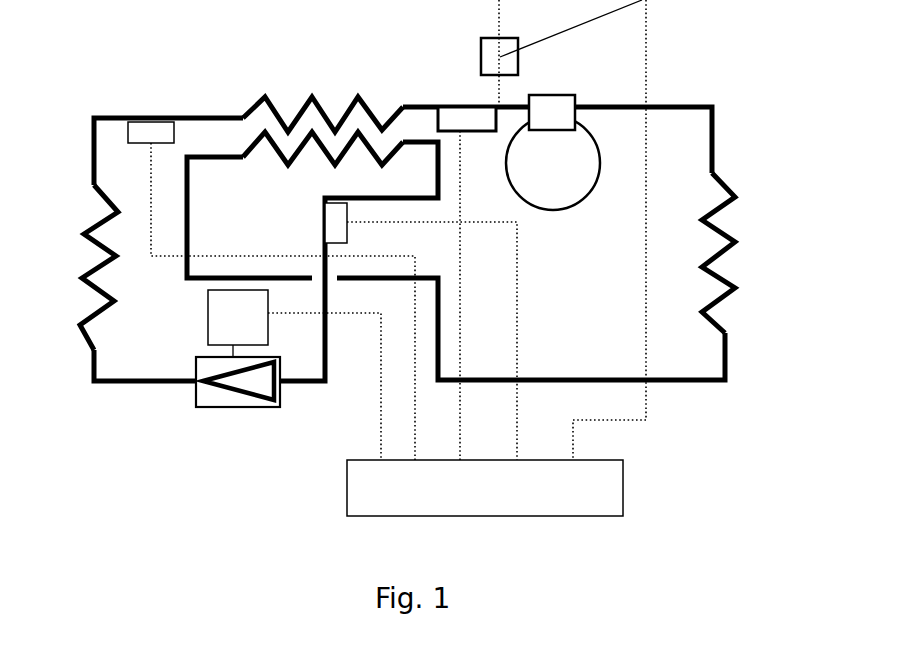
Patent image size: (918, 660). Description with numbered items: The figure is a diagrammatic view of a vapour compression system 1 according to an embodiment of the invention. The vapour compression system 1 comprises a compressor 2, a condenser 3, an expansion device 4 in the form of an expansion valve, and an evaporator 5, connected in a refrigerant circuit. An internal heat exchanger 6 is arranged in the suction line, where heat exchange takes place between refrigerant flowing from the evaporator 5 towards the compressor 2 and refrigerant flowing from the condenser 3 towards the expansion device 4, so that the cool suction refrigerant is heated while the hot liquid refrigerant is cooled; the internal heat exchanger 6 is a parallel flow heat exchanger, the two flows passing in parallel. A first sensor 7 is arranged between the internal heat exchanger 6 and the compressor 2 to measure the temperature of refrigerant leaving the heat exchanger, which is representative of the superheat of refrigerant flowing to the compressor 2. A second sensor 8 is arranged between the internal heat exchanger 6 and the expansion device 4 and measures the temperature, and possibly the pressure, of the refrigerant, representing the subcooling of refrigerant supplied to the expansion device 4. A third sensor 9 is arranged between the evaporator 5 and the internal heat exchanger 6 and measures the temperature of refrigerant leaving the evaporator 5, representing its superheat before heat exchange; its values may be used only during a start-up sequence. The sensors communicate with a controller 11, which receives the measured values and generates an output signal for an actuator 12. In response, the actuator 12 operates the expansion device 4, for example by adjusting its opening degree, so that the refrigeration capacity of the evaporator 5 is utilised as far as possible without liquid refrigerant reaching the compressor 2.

The vapour compression system 1 is at (737, 37).
The compressor 2 is at (557, 110).
The condenser 3 is at (728, 248).
The expansion device 4 is at (218, 393).
The evaporator 5 is at (90, 240).
The internal heat exchanger 6 is at (335, 118).
The first sensor 7 is at (466, 115).
The second sensor 8 is at (340, 225).
The third sensor 9 is at (160, 132).
The controller 11 is at (542, 498).
The actuator 12 is at (217, 313).